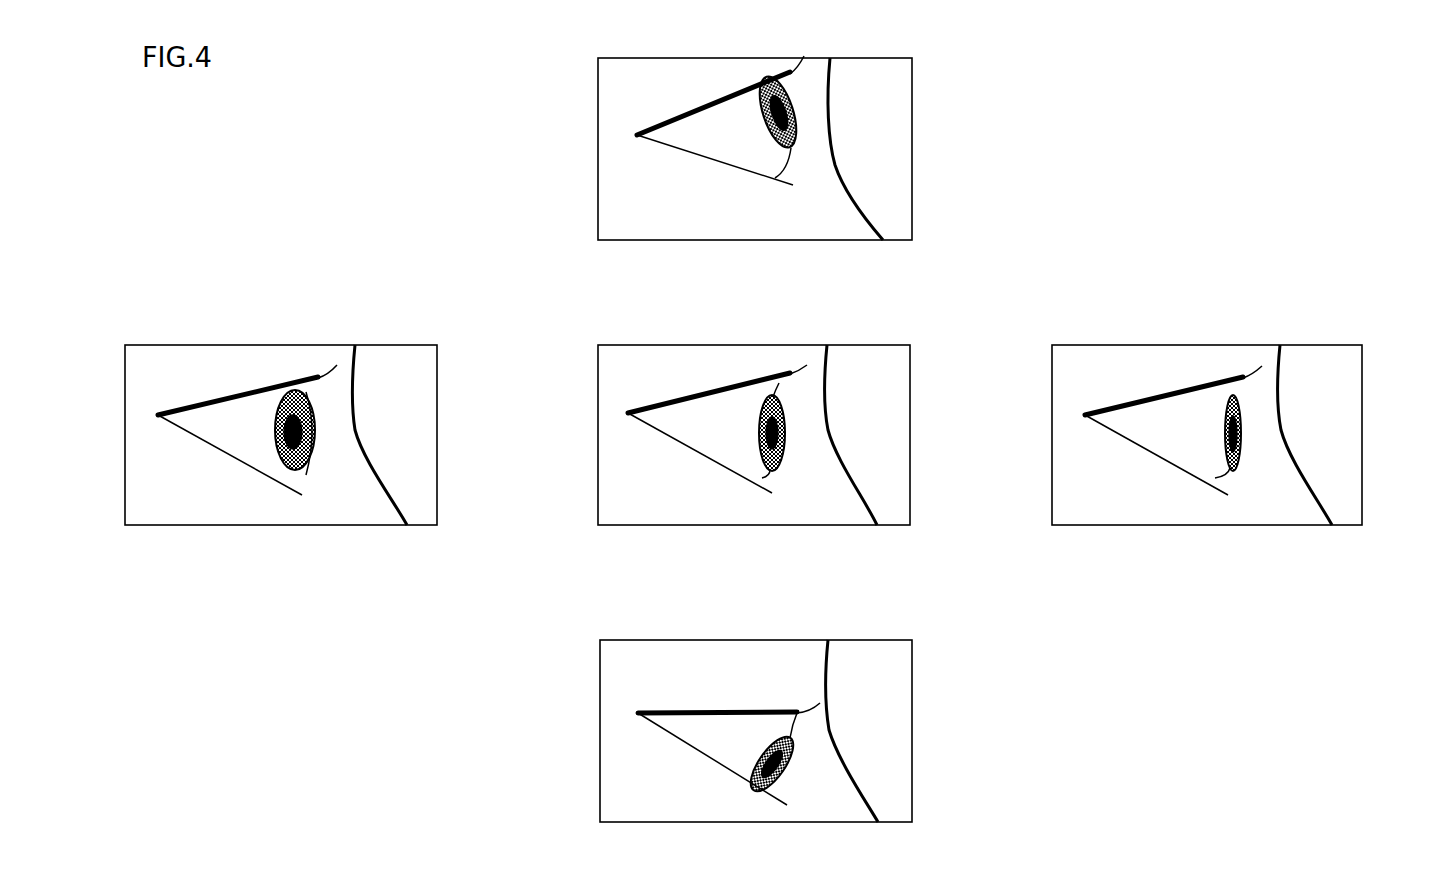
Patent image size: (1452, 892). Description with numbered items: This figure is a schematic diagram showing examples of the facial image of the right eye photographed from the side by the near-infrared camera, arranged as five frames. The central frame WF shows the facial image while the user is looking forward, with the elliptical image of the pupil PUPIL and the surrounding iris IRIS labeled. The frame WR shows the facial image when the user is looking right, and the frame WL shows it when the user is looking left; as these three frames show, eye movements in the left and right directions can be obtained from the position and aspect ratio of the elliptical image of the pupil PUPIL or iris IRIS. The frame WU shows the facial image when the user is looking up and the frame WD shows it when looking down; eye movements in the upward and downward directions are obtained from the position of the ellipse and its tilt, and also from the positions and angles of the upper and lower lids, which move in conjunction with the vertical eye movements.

The facial image in a state where the user is looking up WU is at (912, 78).
The facial image in a state where the user is looking right WR is at (437, 366).
The facial image in a state where the user is looking forward WF is at (787, 427).
The facial image in a state where the user is looking left WL is at (1363, 367).
The facial image in a state where the user is looking down WD is at (912, 662).
The pupil PUPIL is at (779, 432).
The iris IRIS is at (773, 468).